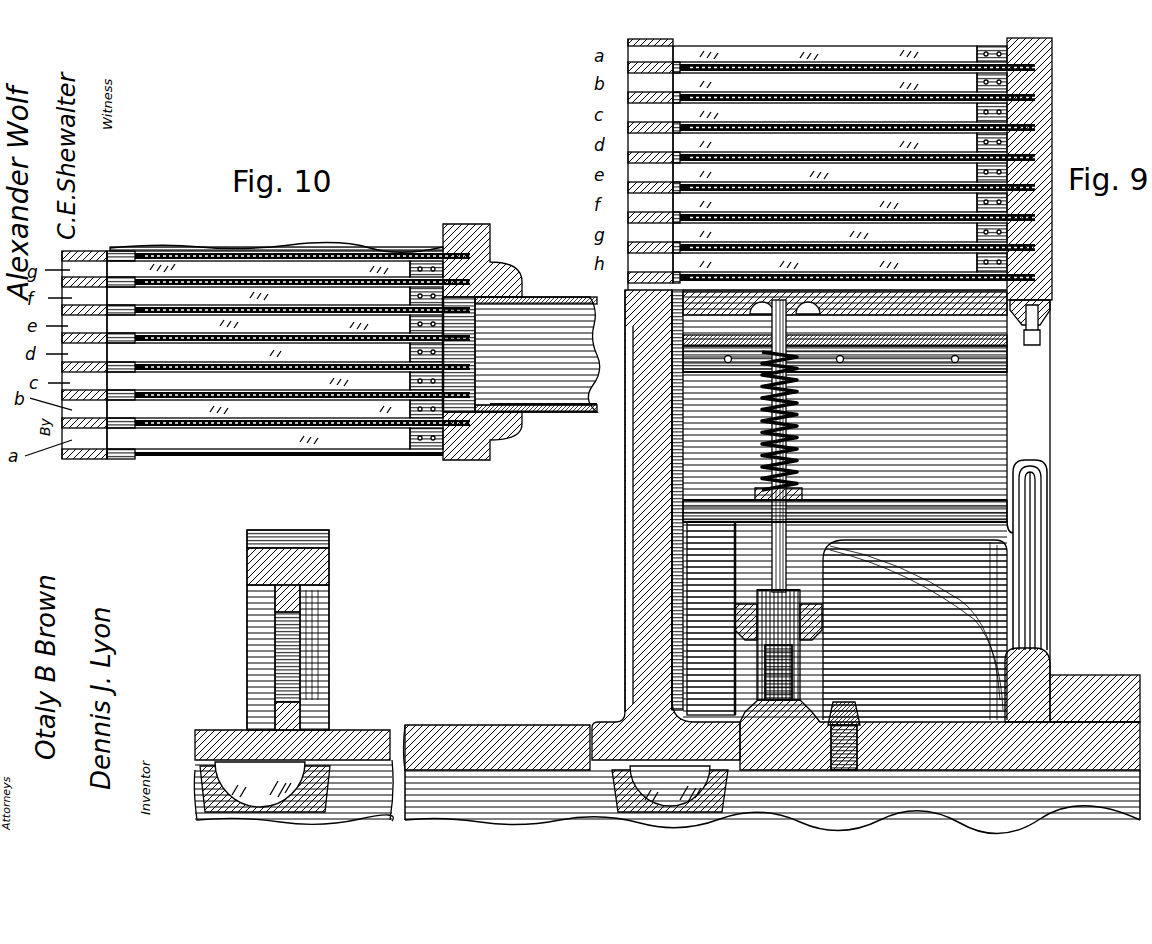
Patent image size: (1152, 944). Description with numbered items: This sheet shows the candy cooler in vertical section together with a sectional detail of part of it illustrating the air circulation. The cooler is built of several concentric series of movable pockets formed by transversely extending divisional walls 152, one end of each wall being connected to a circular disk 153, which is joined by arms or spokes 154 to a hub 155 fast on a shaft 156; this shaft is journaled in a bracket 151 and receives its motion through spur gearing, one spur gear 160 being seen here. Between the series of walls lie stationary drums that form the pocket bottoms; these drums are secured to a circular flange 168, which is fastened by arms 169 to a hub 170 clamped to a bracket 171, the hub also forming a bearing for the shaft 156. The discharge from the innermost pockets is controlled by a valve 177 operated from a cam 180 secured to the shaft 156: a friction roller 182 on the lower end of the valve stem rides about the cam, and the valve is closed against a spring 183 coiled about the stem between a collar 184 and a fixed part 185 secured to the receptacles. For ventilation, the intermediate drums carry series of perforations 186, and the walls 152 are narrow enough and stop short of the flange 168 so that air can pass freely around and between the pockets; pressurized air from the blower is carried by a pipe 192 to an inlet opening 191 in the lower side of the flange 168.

In FIG. 9, the bracket 151 is at (437, 735).
In FIG. 10, the divisional walls 152 is at (310, 262).
In FIG. 9, the divisional walls 152 is at (967, 86).
In FIG. 10, the circular disk 153 is at (90, 250).
In FIG. 9, the arms or spokes 154 is at (638, 554).
In FIG. 9, the hub 155 is at (630, 737).
In FIG. 9, the shaft 156 is at (493, 806).
In FIG. 9, the spur gear 160 is at (322, 576).
In FIG. 10, the circular flange 168 is at (488, 254).
In FIG. 9, the circular flange 168 is at (1040, 242).
In FIG. 9, the arms 169 is at (1030, 578).
In FIG. 9, the hub 170 is at (1093, 746).
In FIG. 9, the bracket 171 is at (1076, 708).
In FIG. 9, the valve 177 is at (1046, 304).
In FIG. 9, the cam 180 is at (747, 716).
In FIG. 9, the friction roller 182 is at (768, 510).
In FIG. 9, the spring 183 is at (798, 440).
In FIG. 9, the collar 184 is at (790, 482).
In FIG. 9, the fixed part 185 is at (1010, 356).
In FIG. 10, the perforations 186 is at (392, 245).
In FIG. 10, the inlet opening 191 is at (526, 296).
In FIG. 10, the pipe 192 is at (540, 412).